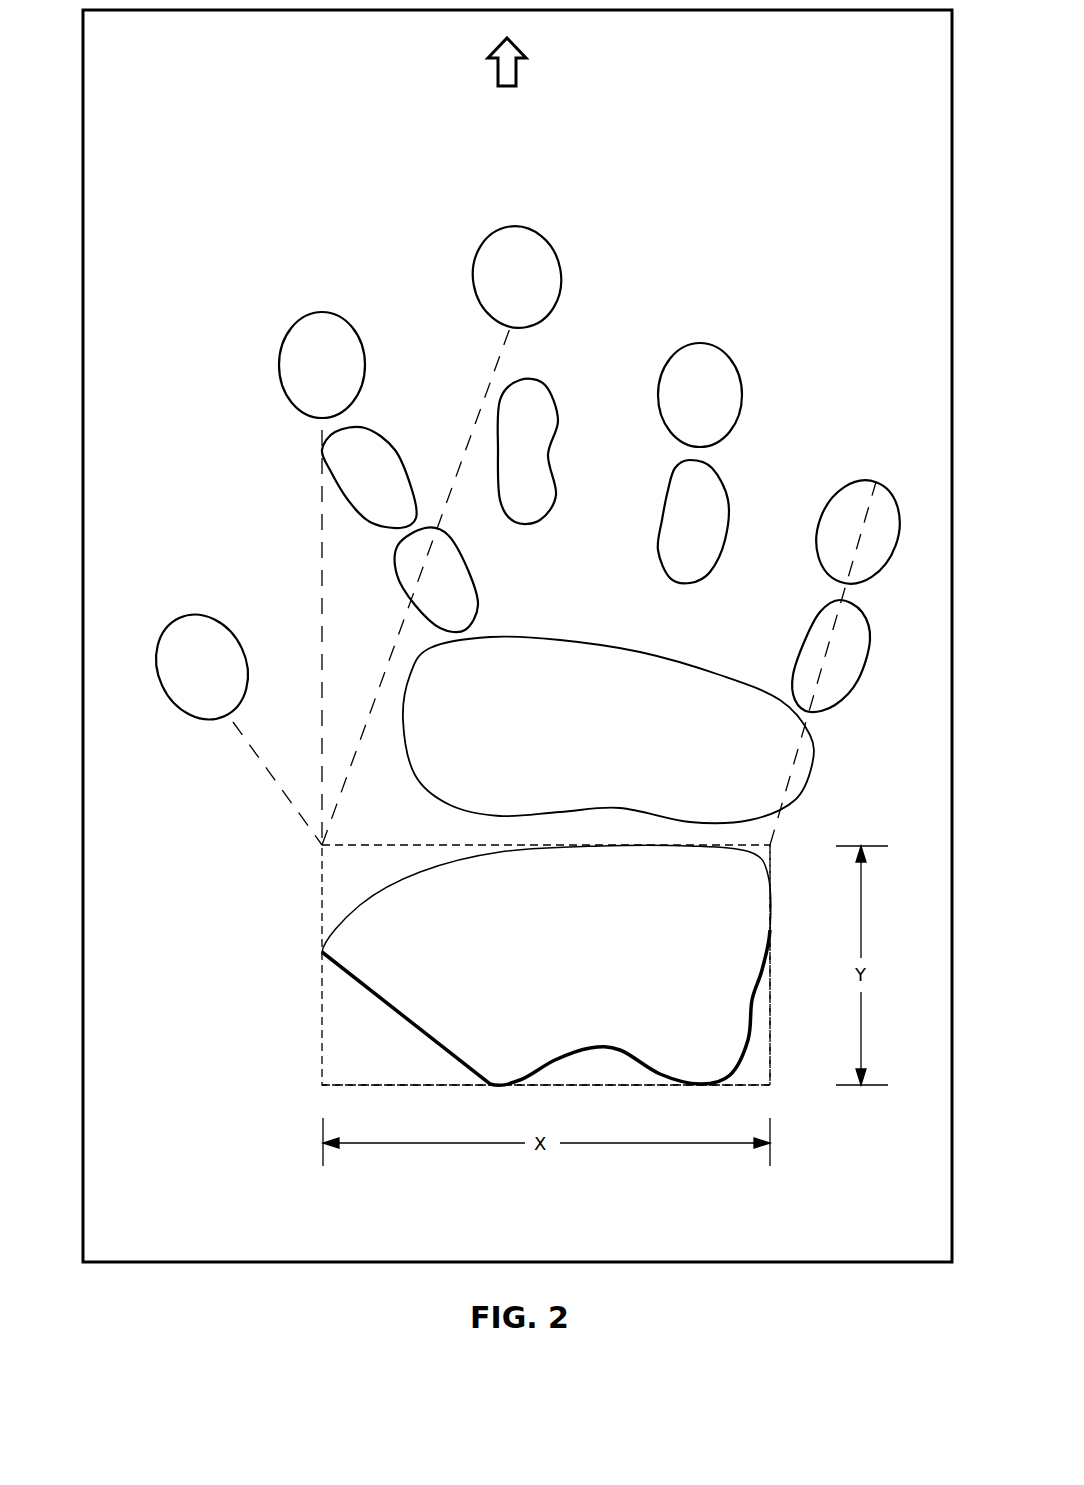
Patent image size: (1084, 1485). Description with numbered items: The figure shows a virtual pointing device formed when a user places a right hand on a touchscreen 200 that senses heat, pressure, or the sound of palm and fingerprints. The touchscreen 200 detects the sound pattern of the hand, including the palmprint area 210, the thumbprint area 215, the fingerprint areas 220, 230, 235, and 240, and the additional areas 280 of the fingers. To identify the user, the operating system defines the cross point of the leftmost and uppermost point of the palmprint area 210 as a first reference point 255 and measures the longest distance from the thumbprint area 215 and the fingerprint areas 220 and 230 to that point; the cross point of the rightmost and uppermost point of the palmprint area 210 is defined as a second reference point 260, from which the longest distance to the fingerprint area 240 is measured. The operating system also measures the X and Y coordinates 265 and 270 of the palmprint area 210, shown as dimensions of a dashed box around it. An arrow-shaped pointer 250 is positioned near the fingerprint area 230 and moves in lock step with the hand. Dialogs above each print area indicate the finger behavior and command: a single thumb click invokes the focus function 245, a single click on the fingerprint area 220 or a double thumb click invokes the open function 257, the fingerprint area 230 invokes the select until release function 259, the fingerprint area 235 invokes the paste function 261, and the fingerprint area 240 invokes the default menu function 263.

The touchscreen 200 is at (157, 1216).
The palmprint area 210 is at (674, 901).
The thumbprint area 215 is at (180, 676).
The fingerprint area 220 is at (304, 376).
The fingerprint area 230 is at (506, 283).
The fingerprint area 235 is at (682, 404).
The fingerprint area 240 is at (844, 545).
The focus function 245 is at (240, 590).
The pointer 250 is at (522, 50).
The first reference point 255 is at (322, 845).
The open function 257 is at (334, 268).
The select until release function 259 is at (560, 168).
The second reference point 260 is at (770, 845).
The paste function 261 is at (697, 305).
The default menu function 263 is at (868, 422).
The X coordinate of palmprint area 265 is at (470, 1088).
The Y coordinate of palmprint area 270 is at (771, 960).
The areas 280 is at (354, 490).